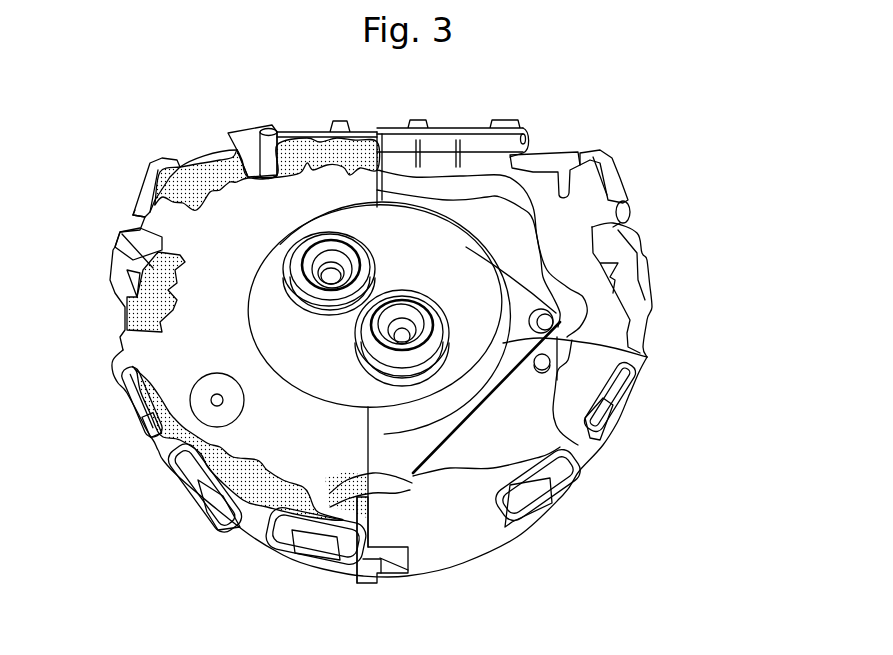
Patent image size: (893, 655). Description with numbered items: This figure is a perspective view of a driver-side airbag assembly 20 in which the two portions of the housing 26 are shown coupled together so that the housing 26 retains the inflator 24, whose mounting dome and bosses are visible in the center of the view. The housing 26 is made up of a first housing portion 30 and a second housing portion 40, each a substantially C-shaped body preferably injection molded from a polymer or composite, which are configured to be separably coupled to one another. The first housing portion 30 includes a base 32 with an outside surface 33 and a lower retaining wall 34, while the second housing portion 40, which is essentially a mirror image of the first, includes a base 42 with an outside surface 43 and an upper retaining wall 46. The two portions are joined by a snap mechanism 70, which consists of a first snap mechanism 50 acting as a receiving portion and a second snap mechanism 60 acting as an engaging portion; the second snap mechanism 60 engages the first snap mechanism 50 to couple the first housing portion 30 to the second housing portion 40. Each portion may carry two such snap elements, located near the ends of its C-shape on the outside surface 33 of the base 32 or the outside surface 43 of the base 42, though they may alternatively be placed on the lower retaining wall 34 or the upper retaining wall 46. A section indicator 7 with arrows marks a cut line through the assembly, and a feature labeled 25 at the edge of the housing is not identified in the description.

The section line 7- 7 is at (311, 602).
The driver-side airbag assembly 20 is at (686, 150).
The inflator 24 is at (418, 242).
The housing edge 25 is at (645, 360).
The housing 26 is at (107, 178).
The first housing portion 30 is at (561, 170).
The base 32 is at (608, 430).
The outside surface 33 is at (532, 520).
The lower retaining wall 34 is at (518, 442).
The second housing portion 40 is at (210, 167).
The base 42 is at (147, 431).
The outside surface 43 is at (213, 507).
The upper retaining wall 46 is at (223, 344).
The first snap mechanism 50 is at (457, 560).
The second snap mechanism 60 is at (381, 558).
The snap mechanism 70 is at (413, 598).